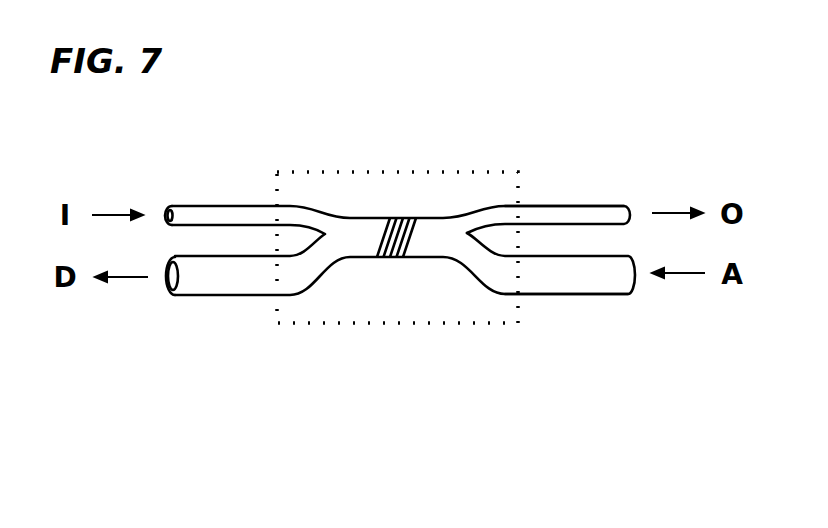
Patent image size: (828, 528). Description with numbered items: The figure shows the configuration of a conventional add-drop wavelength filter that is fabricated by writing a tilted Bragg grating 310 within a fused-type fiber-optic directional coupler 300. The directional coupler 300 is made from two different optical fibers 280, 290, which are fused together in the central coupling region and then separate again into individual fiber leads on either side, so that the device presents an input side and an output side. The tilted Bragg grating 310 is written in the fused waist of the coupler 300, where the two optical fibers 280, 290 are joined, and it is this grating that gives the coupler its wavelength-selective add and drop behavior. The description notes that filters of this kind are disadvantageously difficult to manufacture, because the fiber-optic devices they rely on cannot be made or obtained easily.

The optical fiber 280 is at (573, 206).
The optical fiber 290 is at (578, 295).
The fused-type fiber-optic directional coupler 300 is at (323, 323).
The tilted Bragg grating 310 is at (403, 218).